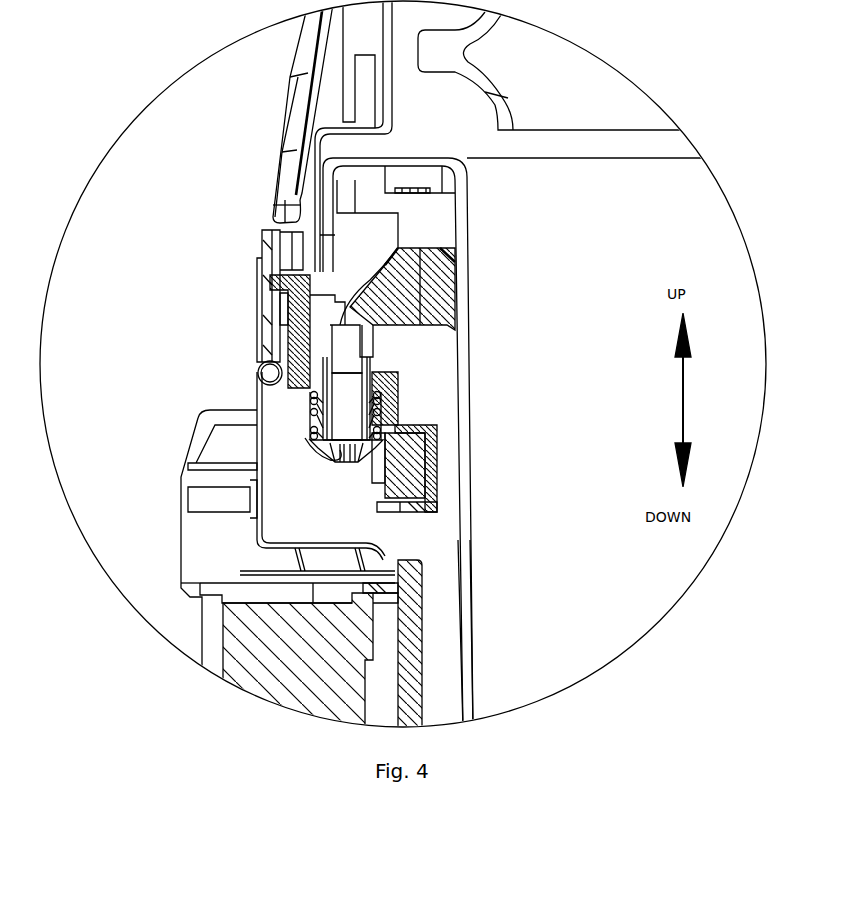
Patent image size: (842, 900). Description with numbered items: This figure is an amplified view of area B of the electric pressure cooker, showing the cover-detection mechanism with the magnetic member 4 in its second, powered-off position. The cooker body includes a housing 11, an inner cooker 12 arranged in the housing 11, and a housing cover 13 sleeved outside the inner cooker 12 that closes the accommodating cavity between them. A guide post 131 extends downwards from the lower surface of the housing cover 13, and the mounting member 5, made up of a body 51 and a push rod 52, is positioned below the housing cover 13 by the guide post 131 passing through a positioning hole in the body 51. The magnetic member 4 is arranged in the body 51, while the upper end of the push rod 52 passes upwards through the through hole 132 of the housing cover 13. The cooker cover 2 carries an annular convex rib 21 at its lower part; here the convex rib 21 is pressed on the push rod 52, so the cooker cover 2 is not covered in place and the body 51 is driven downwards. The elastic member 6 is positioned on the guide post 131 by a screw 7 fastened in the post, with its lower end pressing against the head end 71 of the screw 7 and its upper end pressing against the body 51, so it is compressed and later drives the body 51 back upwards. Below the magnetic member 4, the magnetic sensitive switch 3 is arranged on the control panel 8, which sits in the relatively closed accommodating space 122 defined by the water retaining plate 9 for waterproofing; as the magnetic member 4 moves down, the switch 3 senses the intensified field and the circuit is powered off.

The area B is at (124, 133).
The cooker cover 2 is at (305, 72).
The convex rib 21 is at (300, 215).
The inner cooker 12 is at (465, 200).
The accommodating space 122 is at (470, 690).
The housing cover 13 is at (283, 270).
The through hole 132 is at (295, 290).
The guide post 131 is at (312, 410).
The housing 11 is at (185, 537).
The mounting member 5 is at (558, 290).
The push rod 52 is at (460, 300).
The body 51 is at (350, 412).
The screw 7 is at (370, 405).
The head end 71 is at (320, 445).
The elastic member 6 is at (400, 400).
The magnetic member 4 is at (425, 480).
The water retaining plate 9 is at (400, 595).
The magnetic sensitive switch 3 is at (375, 640).
The control panel 8 is at (295, 680).